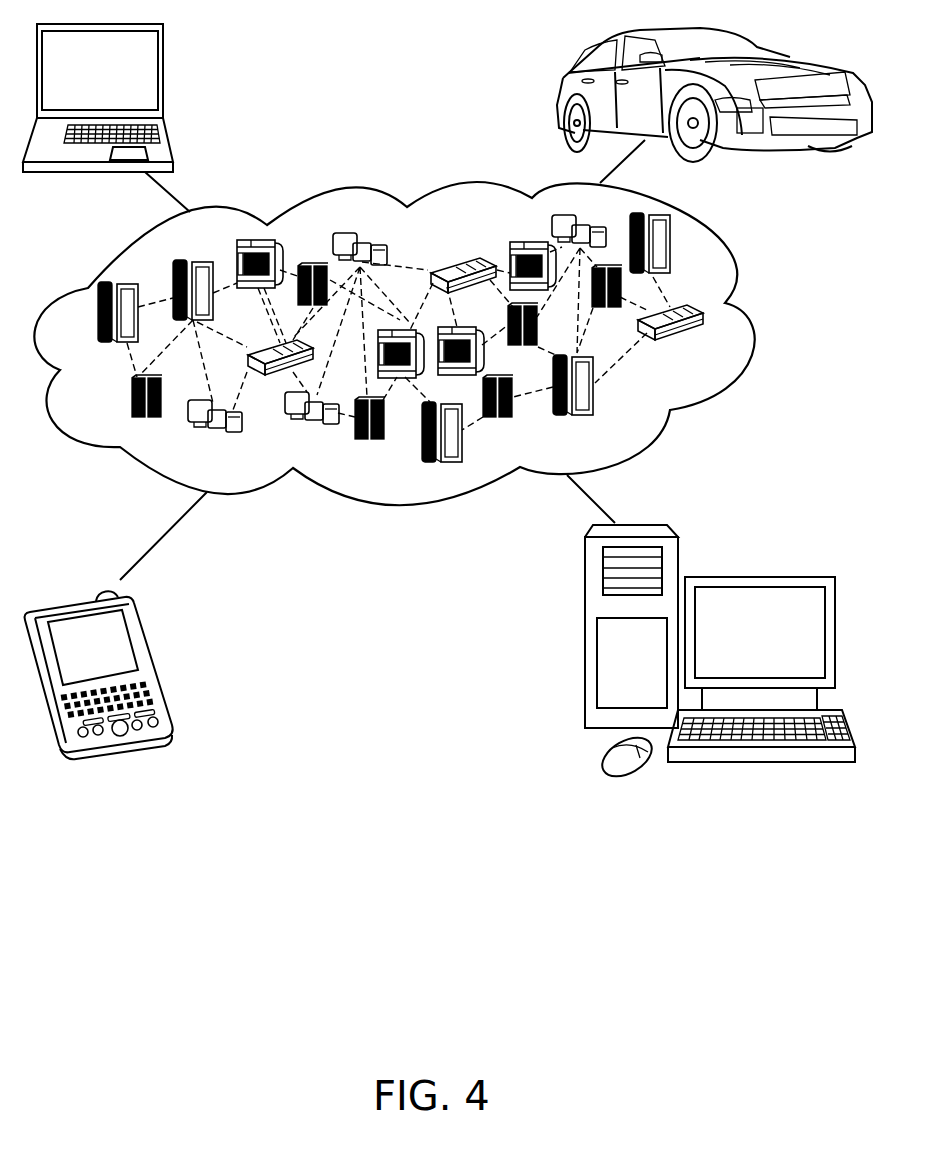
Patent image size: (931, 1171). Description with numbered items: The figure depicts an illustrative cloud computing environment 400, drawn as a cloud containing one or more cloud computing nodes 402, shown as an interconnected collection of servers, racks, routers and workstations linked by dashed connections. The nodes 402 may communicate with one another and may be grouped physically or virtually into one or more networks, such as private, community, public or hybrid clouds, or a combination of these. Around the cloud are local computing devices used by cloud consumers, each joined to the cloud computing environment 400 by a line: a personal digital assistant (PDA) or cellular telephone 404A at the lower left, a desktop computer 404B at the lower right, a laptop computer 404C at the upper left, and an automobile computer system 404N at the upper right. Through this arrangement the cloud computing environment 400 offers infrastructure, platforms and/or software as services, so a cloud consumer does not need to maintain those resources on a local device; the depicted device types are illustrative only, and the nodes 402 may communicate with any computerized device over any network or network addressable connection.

The cloud computing environment 400 is at (712, 315).
The cloud computing nodes 402 is at (703, 345).
The personal digital assistant (PDA) or cellular telephone 404A is at (142, 628).
The desktop computer 404B is at (747, 577).
The laptop computer 404C is at (163, 55).
The automobile computer system 404N is at (560, 93).